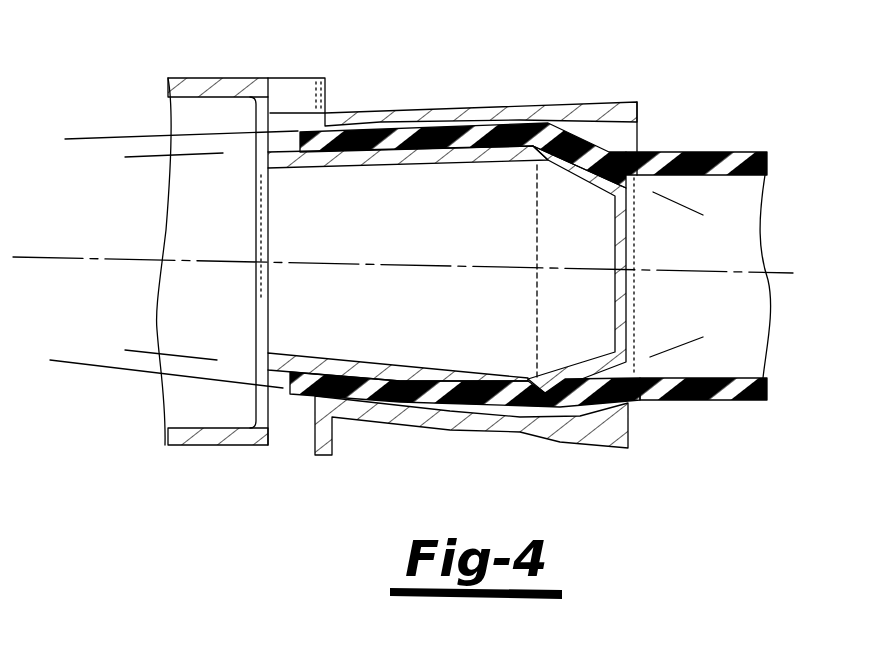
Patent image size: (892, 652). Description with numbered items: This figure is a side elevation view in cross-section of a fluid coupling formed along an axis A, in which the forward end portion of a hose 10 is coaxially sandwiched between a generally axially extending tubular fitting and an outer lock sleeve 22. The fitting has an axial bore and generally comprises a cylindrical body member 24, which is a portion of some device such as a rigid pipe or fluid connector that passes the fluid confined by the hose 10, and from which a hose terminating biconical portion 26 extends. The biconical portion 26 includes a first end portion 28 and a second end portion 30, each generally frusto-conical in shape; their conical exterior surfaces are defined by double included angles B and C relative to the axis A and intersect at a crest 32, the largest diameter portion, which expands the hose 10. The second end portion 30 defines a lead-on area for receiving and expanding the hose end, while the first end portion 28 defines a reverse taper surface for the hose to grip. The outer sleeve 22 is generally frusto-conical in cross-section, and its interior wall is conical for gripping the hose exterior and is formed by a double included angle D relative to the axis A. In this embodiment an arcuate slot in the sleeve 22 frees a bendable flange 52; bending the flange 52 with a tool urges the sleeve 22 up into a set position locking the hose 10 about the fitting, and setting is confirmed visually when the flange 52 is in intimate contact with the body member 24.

The hose 10 is at (714, 145).
The outer lock sleeve 22 is at (551, 99).
The cylindrical body member 24 is at (221, 87).
The hose terminating biconical portion 26 is at (366, 168).
The first end portion 28 is at (424, 163).
The second end portion 30 is at (589, 188).
The crest 32 is at (537, 166).
The flange 52 is at (294, 77).
The axis A is at (328, 268).
The double included angle B is at (137, 349).
The double included angle C is at (686, 342).
The double included angle D is at (77, 360).